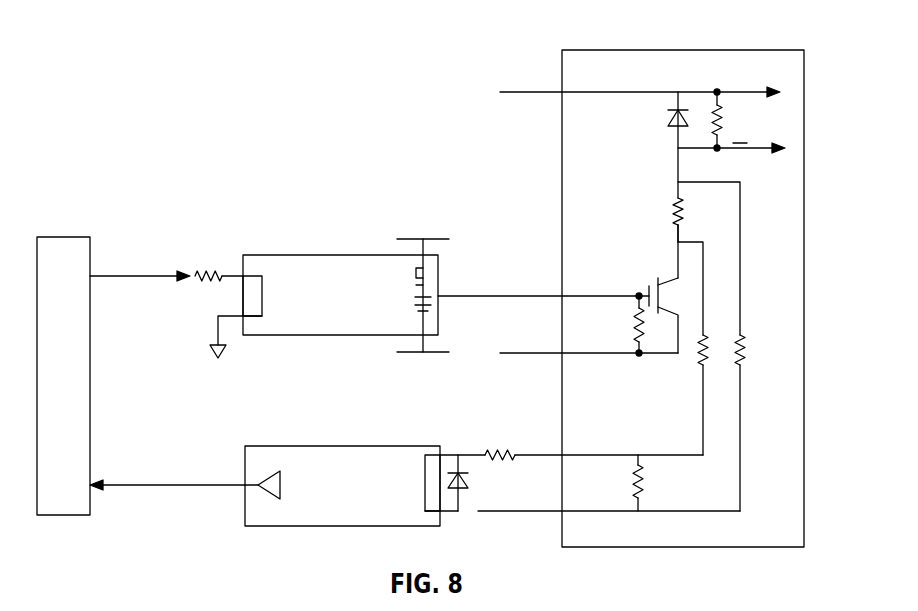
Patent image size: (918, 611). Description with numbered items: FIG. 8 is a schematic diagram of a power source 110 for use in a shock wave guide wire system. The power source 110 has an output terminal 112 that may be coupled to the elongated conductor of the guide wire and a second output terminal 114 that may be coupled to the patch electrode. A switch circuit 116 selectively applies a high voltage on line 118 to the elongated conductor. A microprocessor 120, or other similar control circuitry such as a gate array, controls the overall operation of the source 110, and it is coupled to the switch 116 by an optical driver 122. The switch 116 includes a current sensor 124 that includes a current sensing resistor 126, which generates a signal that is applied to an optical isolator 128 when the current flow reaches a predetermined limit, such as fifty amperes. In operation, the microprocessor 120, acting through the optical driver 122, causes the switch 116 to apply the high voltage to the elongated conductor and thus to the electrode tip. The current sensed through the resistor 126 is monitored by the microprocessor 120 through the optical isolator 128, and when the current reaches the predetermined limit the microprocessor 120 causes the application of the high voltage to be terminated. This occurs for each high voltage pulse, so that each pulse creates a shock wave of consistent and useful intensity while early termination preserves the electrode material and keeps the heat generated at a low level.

The power source 110 is at (305, 175).
The output terminal 112 is at (752, 90).
The output terminal 114 is at (757, 150).
The switch circuit 116 is at (804, 268).
The line 118 is at (560, 90).
The microprocessor 120 is at (92, 383).
The optical driver 122 is at (272, 265).
The current sensor 124 is at (662, 197).
The current sensing resistor 126 is at (672, 225).
The optical isolator 128 is at (288, 450).